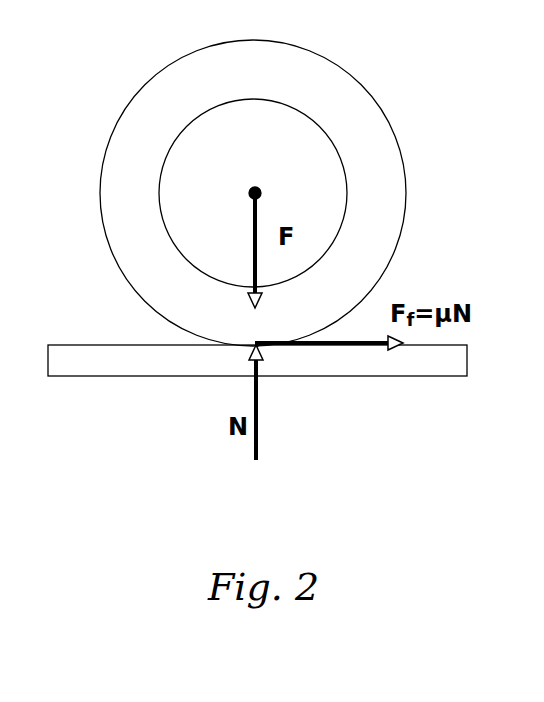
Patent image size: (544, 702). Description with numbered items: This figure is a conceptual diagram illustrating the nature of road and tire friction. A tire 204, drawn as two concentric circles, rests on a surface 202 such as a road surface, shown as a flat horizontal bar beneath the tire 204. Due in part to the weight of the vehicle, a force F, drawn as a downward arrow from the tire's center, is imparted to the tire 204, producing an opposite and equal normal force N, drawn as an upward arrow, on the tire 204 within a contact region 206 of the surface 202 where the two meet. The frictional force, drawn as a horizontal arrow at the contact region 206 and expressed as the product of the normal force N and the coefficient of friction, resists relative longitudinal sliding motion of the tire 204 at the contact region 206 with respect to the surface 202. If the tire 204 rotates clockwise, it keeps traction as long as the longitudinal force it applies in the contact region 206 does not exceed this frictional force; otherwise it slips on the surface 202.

The surface 202 is at (167, 344).
The tire 204 is at (388, 162).
The contact region 206 is at (268, 347).